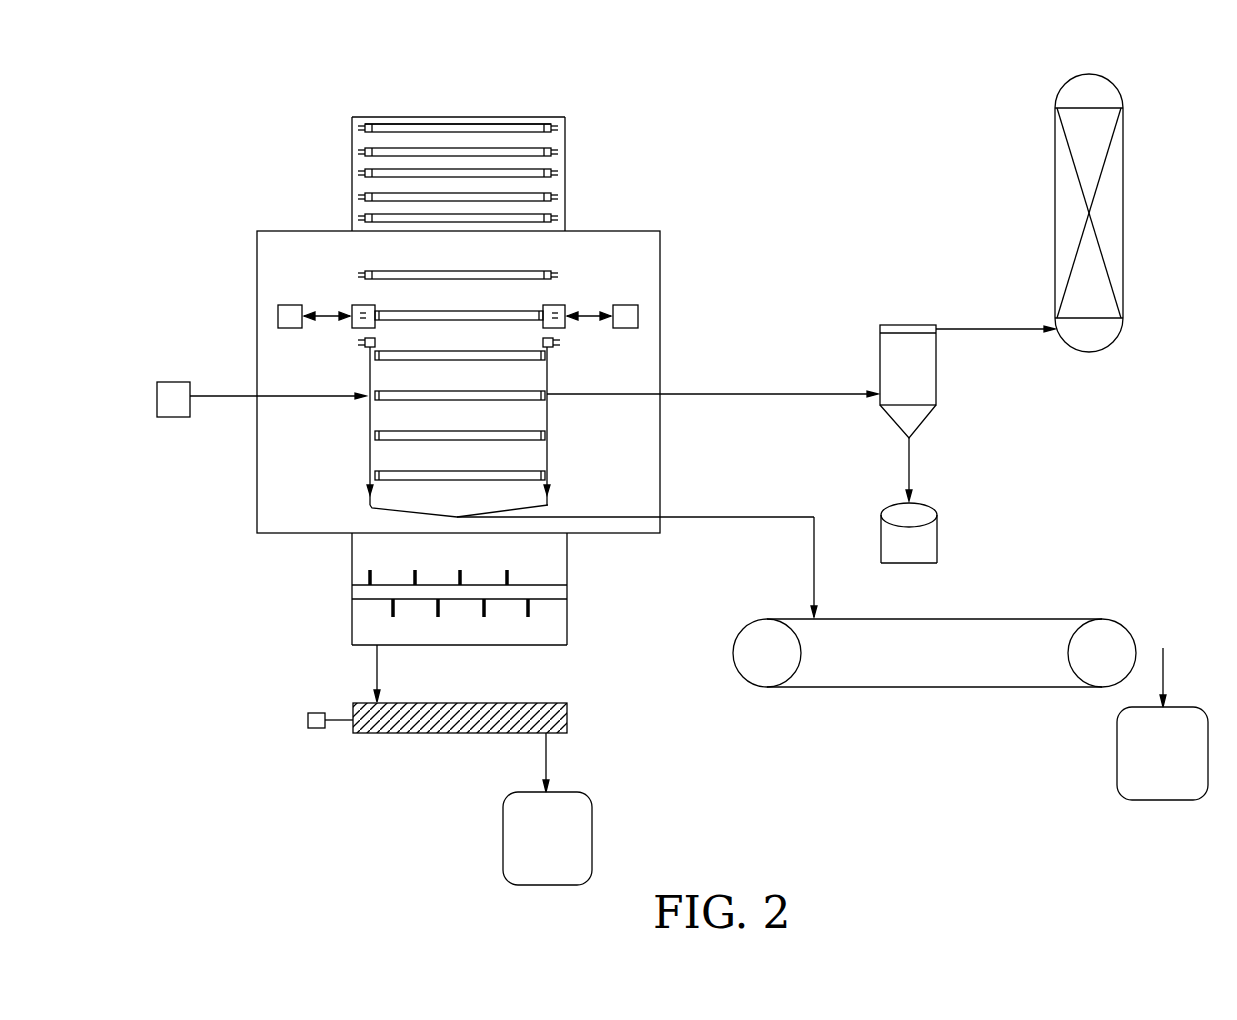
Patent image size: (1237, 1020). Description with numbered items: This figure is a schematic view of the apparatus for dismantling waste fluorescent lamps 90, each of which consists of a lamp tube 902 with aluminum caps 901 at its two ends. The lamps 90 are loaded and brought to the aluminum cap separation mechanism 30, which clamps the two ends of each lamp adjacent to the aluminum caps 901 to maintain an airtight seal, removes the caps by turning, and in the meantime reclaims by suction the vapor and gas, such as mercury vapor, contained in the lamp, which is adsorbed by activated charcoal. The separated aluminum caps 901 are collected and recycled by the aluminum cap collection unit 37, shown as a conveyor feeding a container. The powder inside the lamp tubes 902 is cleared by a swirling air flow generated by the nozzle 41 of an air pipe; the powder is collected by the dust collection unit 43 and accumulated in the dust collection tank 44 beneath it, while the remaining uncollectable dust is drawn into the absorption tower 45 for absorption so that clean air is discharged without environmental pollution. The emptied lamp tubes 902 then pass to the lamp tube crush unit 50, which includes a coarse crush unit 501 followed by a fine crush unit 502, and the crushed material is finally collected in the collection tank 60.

The waste fluorescent lamp 90 is at (482, 112).
The aluminum cap 901 is at (557, 125).
The lamp tube 902 is at (401, 126).
The aluminum cap separation mechanism 30 is at (278, 316).
The nozzle 41 is at (171, 400).
The dust collection unit 43 is at (920, 382).
The dust collection tank 44 is at (912, 548).
The absorption tower 45 is at (1108, 250).
The lamp tube crush unit 50 is at (394, 637).
The coarse crush unit 501 is at (356, 593).
The fine crush unit 502 is at (303, 718).
The collection tank 60 is at (543, 858).
The aluminum cap collection unit 37 is at (1062, 742).